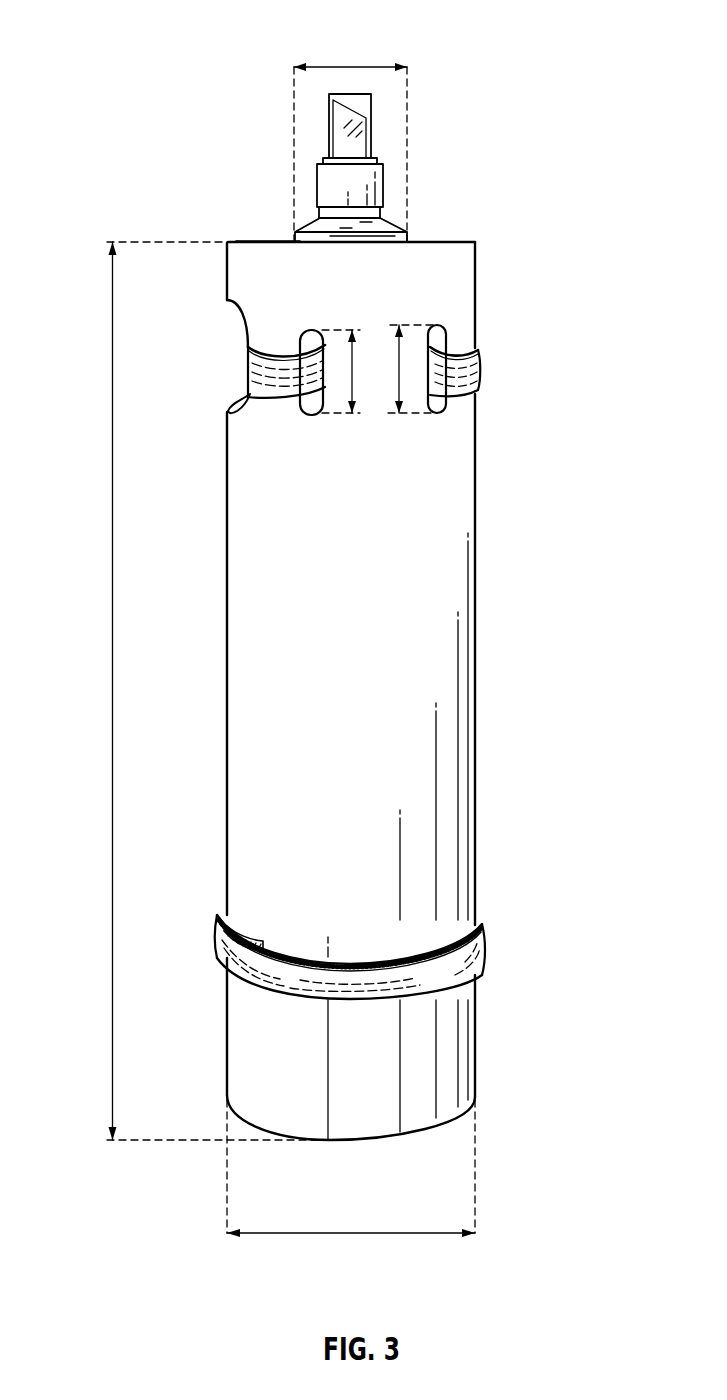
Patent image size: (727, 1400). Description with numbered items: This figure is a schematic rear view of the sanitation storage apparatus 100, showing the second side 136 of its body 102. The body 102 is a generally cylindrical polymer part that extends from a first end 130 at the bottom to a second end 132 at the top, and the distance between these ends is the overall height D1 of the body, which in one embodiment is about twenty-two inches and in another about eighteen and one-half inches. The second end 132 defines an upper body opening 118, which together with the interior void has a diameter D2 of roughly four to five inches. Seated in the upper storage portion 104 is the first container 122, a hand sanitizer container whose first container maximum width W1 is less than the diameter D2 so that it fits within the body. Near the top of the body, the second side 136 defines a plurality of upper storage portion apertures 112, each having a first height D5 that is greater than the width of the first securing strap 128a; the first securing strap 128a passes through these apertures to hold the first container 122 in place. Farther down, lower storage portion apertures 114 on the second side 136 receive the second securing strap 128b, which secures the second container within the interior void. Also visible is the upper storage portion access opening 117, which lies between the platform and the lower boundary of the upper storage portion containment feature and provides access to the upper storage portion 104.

The sanitation storage apparatus 100 is at (229, 147).
The body 102 is at (452, 596).
The upper storage portion 104 is at (225, 327).
The upper storage portion apertures 112 is at (436, 413).
The lower storage portion apertures 114 is at (260, 936).
The upper storage portion access opening 117 is at (233, 392).
The upper body opening 118 is at (251, 233).
The first container 122 is at (395, 230).
The first securing strap 128a is at (478, 381).
The second securing strap 128b is at (484, 958).
The first end 130 is at (414, 1136).
The second end 132 is at (470, 242).
The second side 136 is at (358, 668).
The first container maximum width W1 is at (352, 66).
The overall height D1 is at (112, 690).
The diameter D2 is at (370, 1234).
The first height D5 is at (395, 342).